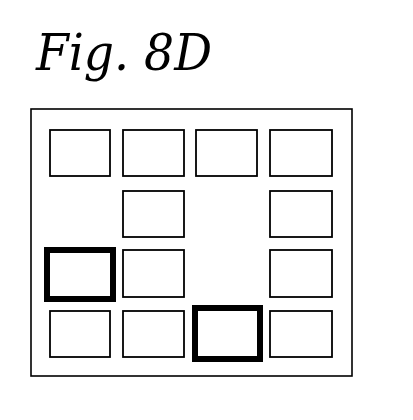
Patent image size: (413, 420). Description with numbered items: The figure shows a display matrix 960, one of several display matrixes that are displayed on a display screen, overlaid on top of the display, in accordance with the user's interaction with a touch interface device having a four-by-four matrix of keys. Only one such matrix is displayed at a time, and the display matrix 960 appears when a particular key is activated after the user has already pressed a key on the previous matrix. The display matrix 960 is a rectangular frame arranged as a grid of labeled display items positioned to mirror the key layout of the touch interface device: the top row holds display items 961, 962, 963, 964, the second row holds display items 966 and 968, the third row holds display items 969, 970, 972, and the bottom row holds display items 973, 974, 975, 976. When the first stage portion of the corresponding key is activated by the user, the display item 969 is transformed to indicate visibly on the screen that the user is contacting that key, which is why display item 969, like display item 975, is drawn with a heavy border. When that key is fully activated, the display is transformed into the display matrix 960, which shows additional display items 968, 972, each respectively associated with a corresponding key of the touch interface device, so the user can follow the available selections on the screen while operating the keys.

The display matrix 960 is at (312, 108).
The display item 961 is at (58, 167).
The display item 962 is at (176, 167).
The display item 963 is at (204, 167).
The display item 964 is at (279, 167).
The display item 966 is at (176, 228).
The additional display item 968 is at (279, 228).
The display item 969 is at (58, 287).
The display item 970 is at (176, 287).
The additional display item 972 is at (279, 287).
The display item 973 is at (58, 348).
The display item 974 is at (176, 348).
The display item 975 is at (250, 348).
The display item 976 is at (279, 348).